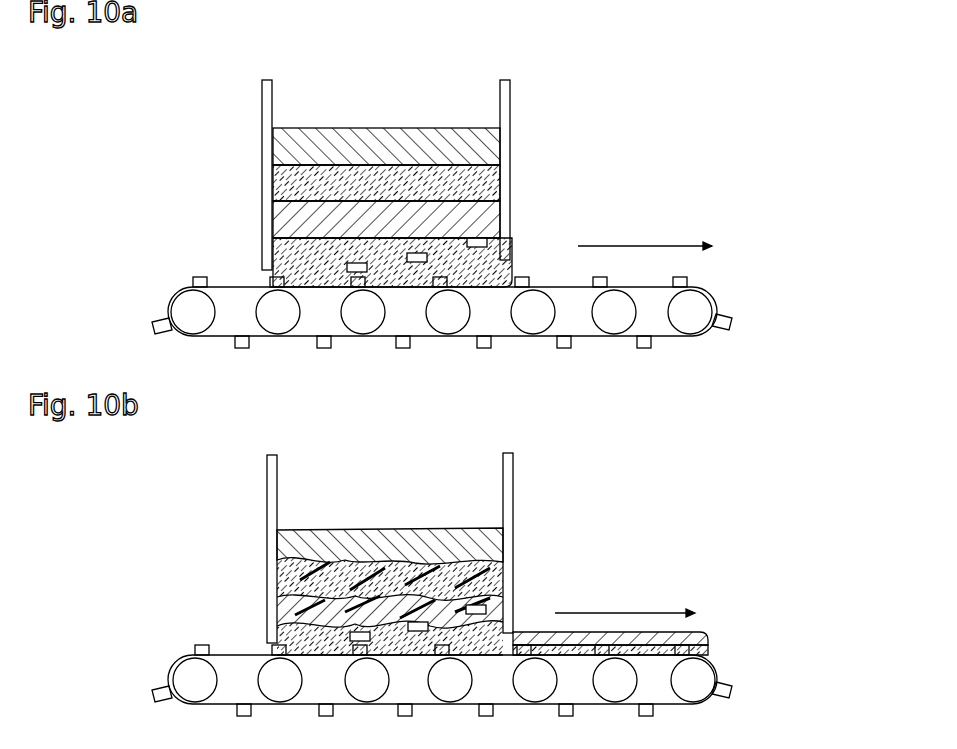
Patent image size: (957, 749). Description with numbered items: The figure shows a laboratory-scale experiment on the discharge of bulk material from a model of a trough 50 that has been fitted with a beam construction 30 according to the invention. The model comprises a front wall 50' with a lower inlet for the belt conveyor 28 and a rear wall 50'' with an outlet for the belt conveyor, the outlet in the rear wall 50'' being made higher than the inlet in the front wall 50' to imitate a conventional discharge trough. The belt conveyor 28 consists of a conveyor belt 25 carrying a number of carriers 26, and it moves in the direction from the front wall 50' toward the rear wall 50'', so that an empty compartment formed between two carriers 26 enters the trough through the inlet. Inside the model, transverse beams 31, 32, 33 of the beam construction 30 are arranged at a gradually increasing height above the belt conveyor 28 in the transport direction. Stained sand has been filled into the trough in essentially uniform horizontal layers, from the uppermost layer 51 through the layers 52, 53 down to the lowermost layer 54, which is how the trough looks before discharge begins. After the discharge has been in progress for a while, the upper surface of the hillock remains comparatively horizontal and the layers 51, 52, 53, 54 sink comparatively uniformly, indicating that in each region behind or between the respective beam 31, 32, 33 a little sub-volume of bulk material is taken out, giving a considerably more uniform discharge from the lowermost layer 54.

In FIG. 10A, the conveyor belt 25 is at (535, 338).
In FIG. 10A, the carriers 26 is at (405, 350).
In FIG. 10A, the belt conveyor 28 is at (679, 356).
In FIG. 10A, the beam construction 30 is at (417, 184).
In FIG. 10A, the transverse beam 31 is at (470, 185).
In FIG. 10A, the transverse beam 32 is at (455, 195).
In FIG. 10A, the transverse beam 33 is at (440, 228).
In FIG. 10A, the model of a trough 50 is at (393, 139).
In FIG. 10A, the front wall 50' is at (245, 150).
In FIG. 10A, the rear wall 50'' is at (534, 145).
In FIG. 10A, the uppermost layer 51 is at (290, 127).
In FIG. 10B, the uppermost layer 51 is at (360, 529).
In FIG. 10A, the layer 52 is at (290, 168).
In FIG. 10B, the layer 52 is at (345, 557).
In FIG. 10A, the layer 53 is at (290, 212).
In FIG. 10B, the layer 53 is at (330, 597).
In FIG. 10A, the lowermost layer 54 is at (290, 255).
In FIG. 10B, the lowermost layer 54 is at (330, 632).